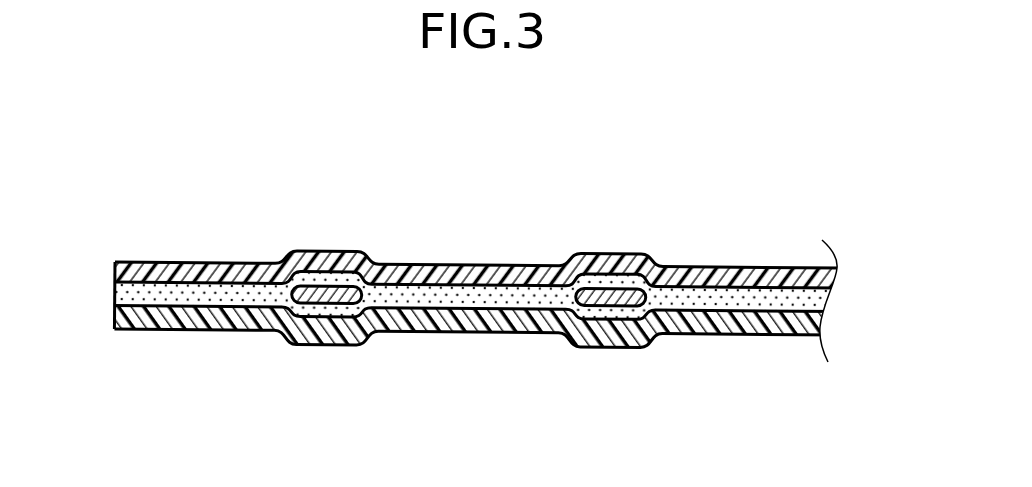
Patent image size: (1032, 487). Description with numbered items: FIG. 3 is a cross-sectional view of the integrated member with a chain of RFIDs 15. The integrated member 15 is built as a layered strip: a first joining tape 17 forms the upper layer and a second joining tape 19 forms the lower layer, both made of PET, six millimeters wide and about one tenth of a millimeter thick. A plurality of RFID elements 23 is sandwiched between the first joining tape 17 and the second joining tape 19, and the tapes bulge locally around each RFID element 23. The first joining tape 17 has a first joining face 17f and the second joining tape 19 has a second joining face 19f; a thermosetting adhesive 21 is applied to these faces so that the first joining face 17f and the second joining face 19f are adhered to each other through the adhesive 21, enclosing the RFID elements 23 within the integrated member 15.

The integrated member with a chain of RFIDs 15 is at (474, 229).
The first joining tape 17 is at (695, 267).
The first joining face 17f is at (729, 287).
The second joining tape 19 is at (680, 335).
The second joining face 19f is at (690, 314).
The thermosetting adhesive 21 is at (436, 303).
The RFID element 23 is at (322, 293).